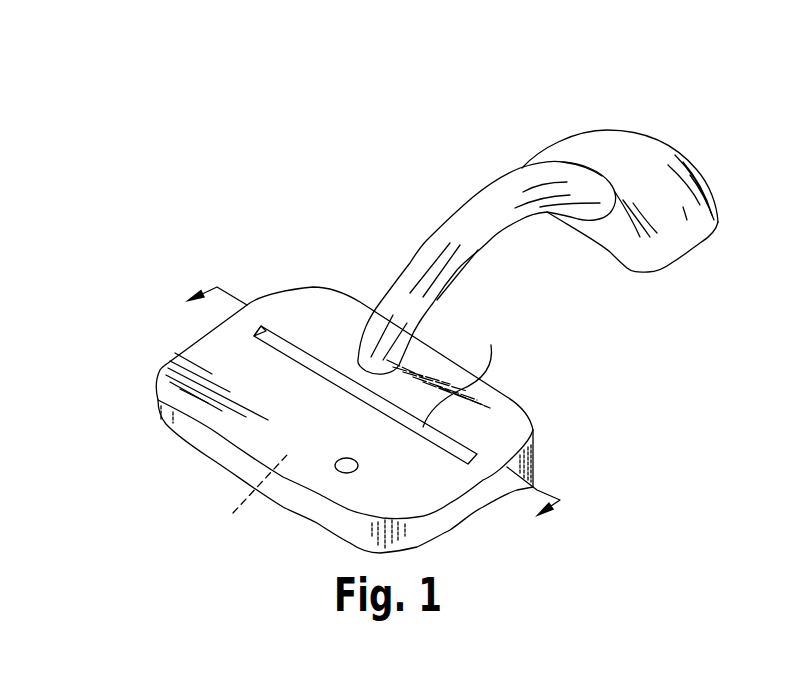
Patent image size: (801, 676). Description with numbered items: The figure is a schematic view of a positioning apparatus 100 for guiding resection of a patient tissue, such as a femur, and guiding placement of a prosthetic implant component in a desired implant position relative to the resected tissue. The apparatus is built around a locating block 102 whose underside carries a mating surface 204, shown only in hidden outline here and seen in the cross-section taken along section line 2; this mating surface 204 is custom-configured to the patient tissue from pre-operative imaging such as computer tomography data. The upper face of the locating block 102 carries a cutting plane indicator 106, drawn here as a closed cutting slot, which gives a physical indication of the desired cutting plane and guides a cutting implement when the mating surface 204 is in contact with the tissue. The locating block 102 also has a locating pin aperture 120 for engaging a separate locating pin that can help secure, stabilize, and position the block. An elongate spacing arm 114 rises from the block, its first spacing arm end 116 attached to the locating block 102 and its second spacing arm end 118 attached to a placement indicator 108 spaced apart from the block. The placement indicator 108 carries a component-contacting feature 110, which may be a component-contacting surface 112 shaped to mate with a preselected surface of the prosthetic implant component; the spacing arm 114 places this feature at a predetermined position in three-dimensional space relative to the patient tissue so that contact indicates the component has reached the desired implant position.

The positioning apparatus 100 is at (212, 183).
The locating block 102 is at (552, 410).
The cutting plane indicator 106 is at (473, 374).
The placement indicator 108 is at (623, 105).
The component-contacting feature 110 is at (686, 160).
The component-contacting surface 112 is at (663, 223).
The elongate spacing arm 114 is at (420, 263).
The first spacing arm end 116 is at (320, 275).
The second spacing arm end 118 is at (565, 138).
The locating pin aperture 120 is at (336, 473).
The mating surface 204 is at (238, 493).
The section line 2- 2 is at (361, 417).